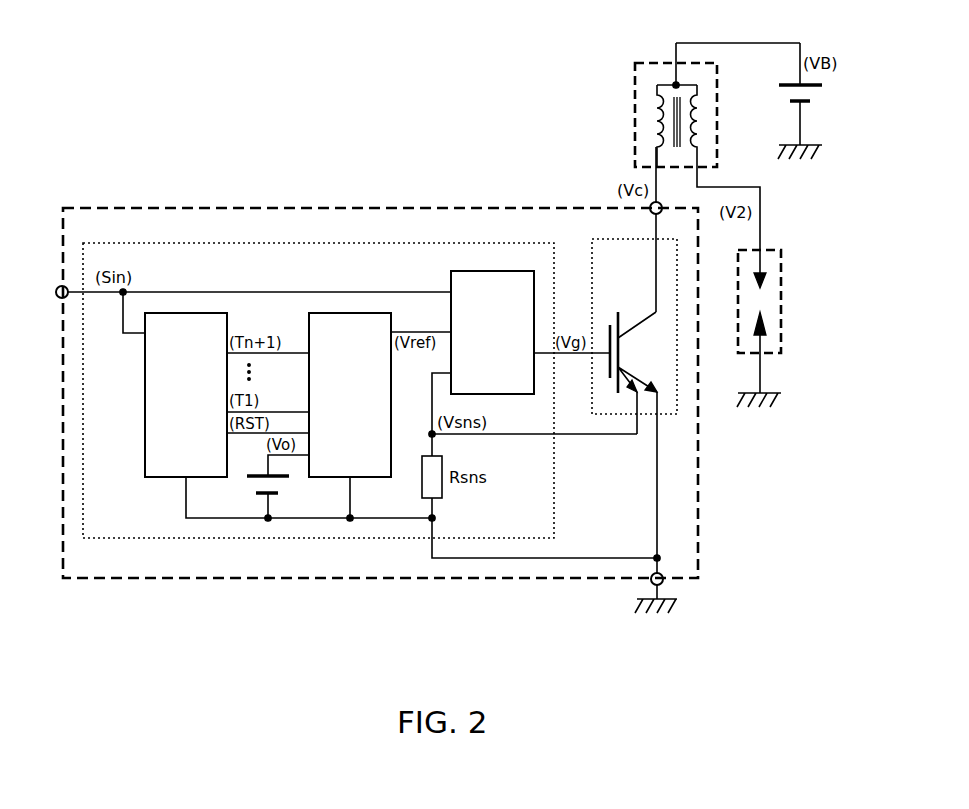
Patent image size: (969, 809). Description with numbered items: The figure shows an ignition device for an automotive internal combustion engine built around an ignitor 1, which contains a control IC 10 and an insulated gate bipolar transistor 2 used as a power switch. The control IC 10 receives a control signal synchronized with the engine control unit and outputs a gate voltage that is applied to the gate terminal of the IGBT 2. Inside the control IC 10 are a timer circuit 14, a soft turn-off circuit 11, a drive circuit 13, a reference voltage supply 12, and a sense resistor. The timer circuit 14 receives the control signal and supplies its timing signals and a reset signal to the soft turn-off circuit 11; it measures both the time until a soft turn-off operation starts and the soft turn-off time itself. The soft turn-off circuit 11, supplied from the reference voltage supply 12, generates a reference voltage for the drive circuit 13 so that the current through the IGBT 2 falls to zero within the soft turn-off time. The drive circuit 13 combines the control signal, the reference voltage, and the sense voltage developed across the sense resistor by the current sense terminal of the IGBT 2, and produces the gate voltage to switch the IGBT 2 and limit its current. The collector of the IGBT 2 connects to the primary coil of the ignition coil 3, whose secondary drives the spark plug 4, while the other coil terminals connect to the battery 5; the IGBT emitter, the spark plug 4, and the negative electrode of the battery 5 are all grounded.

The ignitor 1 is at (303, 207).
The insulated gate bipolar transistor (IGBT) 2 is at (603, 240).
The ignition coil 3 is at (635, 100).
The spark plug 4 is at (781, 300).
The battery 5 is at (780, 90).
The control IC 10 is at (220, 243).
The soft turn-off circuit 11 is at (392, 316).
The reference voltage supply 12 is at (284, 485).
The drive circuit 13 is at (472, 271).
The timer circuit 14 is at (228, 316).